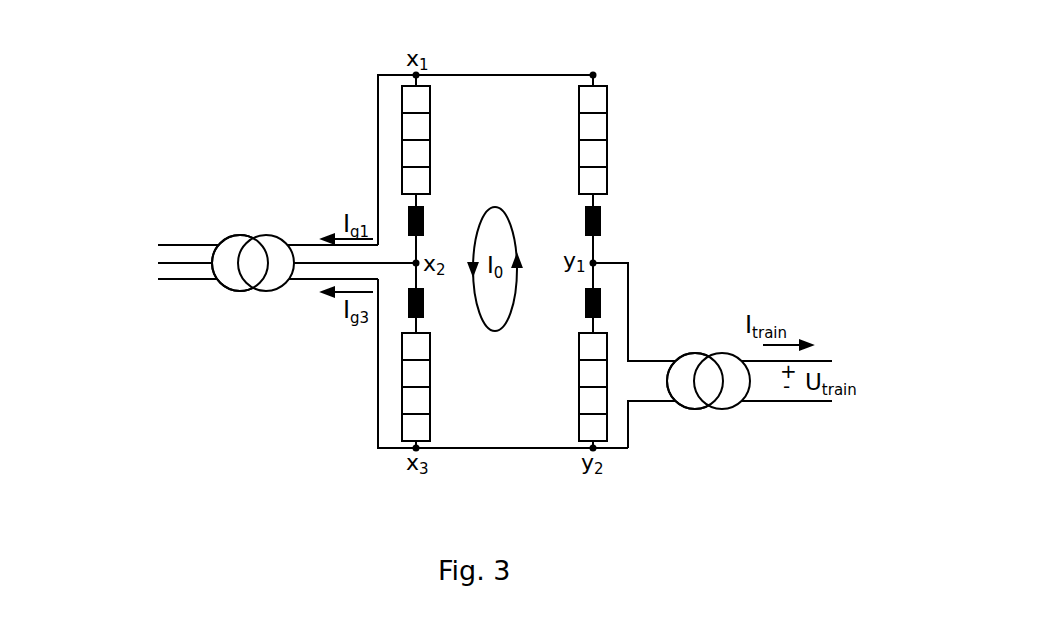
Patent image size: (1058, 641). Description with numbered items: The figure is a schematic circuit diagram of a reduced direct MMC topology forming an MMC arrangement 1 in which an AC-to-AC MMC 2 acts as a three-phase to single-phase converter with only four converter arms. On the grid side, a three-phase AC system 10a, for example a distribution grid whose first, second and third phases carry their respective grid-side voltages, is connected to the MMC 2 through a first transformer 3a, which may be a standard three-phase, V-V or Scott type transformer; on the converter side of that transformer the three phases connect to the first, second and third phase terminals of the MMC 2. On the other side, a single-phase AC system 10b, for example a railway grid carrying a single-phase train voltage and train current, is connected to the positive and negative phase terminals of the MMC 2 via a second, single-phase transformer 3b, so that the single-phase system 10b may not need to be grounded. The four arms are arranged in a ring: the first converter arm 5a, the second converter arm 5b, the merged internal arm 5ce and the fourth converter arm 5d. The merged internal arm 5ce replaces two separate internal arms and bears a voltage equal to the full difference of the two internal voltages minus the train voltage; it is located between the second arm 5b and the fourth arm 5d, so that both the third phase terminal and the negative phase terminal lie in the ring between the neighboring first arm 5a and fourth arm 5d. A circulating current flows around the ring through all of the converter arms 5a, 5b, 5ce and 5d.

The MMC arrangement 1 is at (827, 82).
The AC-to-AC MMC 2 is at (730, 139).
The first transformer 3a is at (285, 302).
The second transformer 3b is at (737, 420).
The first converter arm 5a is at (436, 333).
The second converter arm 5b is at (436, 86).
The merged internal converter arm 5ce is at (577, 86).
The fourth converter arm 5d is at (577, 333).
The three-phase AC system 10a is at (89, 222).
The single-phase AC system 10b is at (853, 338).